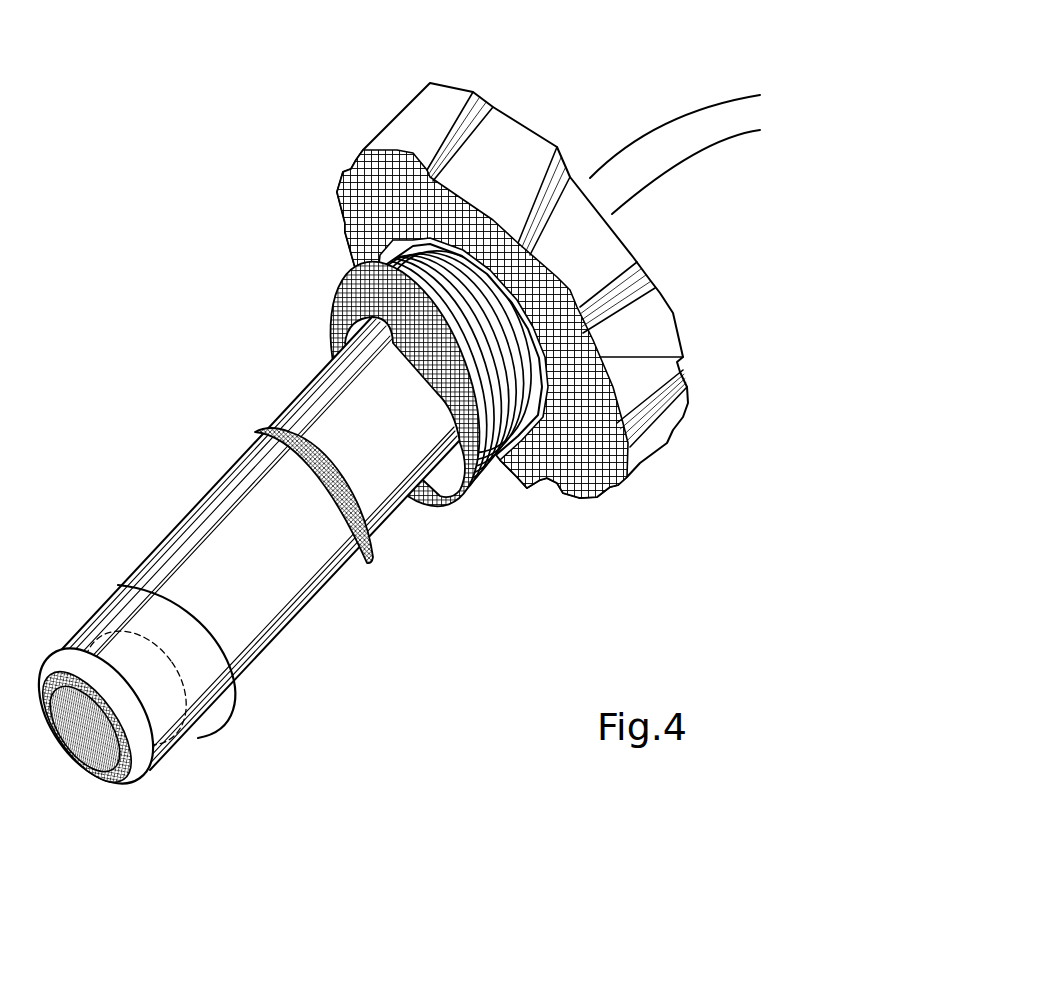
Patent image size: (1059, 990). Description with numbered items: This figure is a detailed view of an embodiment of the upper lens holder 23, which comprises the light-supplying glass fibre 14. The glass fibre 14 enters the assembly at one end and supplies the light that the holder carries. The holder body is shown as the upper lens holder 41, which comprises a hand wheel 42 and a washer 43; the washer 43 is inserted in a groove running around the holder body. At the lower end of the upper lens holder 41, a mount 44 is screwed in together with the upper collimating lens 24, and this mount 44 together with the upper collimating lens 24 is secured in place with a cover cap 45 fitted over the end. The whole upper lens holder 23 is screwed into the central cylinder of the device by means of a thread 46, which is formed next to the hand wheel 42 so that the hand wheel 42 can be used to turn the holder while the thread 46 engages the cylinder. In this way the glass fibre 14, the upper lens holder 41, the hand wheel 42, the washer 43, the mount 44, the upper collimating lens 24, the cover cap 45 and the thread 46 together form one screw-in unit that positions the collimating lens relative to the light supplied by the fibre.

The light-supplying glass fibre 14 is at (678, 138).
The upper lens holder 23 is at (163, 339).
The upper collimating lens 24 is at (73, 752).
The upper lens holder 41 is at (370, 457).
The hand wheel 42 is at (637, 387).
The washer 43 is at (367, 563).
The mount 44 is at (143, 677).
The cover cap 45 is at (157, 762).
The thread 46 is at (353, 294).